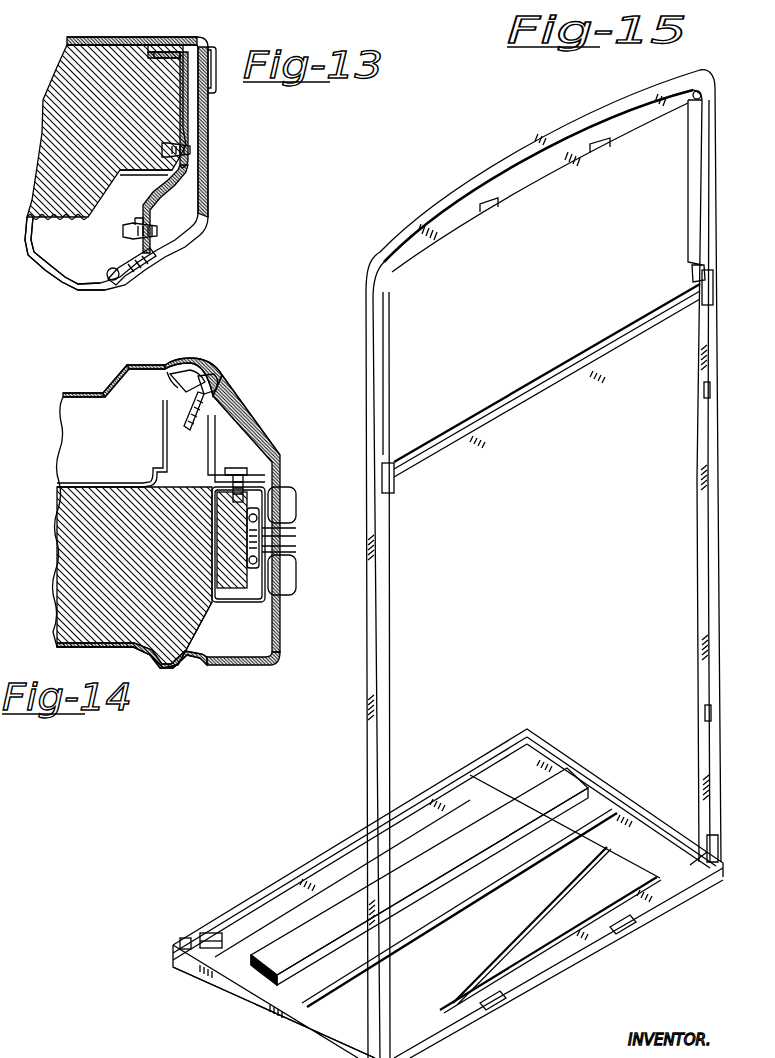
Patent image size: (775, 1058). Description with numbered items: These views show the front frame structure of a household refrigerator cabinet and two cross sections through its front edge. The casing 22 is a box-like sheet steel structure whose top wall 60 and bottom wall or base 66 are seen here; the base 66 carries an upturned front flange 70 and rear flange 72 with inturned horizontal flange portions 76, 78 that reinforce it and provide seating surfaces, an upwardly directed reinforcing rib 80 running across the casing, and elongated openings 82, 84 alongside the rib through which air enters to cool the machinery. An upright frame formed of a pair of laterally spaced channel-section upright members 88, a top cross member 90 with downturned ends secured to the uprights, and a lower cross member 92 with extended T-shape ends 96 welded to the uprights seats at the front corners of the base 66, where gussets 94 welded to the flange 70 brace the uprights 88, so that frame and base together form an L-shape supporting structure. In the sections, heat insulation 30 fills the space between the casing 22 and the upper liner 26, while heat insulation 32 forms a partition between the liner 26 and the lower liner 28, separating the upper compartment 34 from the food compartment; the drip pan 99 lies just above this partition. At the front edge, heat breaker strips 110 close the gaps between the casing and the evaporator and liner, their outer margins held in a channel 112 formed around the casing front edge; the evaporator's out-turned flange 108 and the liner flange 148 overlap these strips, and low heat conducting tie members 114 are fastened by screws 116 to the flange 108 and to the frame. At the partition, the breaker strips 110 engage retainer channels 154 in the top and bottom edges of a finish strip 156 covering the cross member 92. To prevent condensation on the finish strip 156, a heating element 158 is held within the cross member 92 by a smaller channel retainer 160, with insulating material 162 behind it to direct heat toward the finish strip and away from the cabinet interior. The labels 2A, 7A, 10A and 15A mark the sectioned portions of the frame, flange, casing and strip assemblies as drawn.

In FIG. 13, the side frame 2A is at (208, 113).
In FIG. 15, the side frame 2A is at (366, 344).
In FIG. 15, the side rail 7A is at (605, 774).
In FIG. 13, the shell panel 10A is at (55, 275).
In FIG. 14, the shell panel 10A is at (77, 395).
In FIG. 14, the clip plate 15A is at (296, 520).
In FIG. 13, the casing 22 is at (168, 38).
In FIG. 13, the liner 26 is at (86, 222).
In FIG. 14, the second liner 28 is at (183, 668).
In FIG. 13, the heat insulation 30 is at (70, 98).
In FIG. 14, the heat insulation 32 is at (72, 554).
In FIG. 13, the compartment 34 is at (87, 276).
In FIG. 14, the compartment 34 is at (72, 448).
In FIG. 13, the top wall 60 is at (148, 40).
In FIG. 15, the bottom wall 66 is at (466, 1028).
In FIG. 15, the front flange 70 is at (530, 983).
In FIG. 15, the rear flange 72 is at (180, 942).
In FIG. 15, the flange portion 76 is at (557, 940).
In FIG. 15, the flange portion 78 is at (452, 783).
In FIG. 15, the reinforcing rib 80 is at (503, 823).
In FIG. 15, the elongated opening 82 is at (233, 943).
In FIG. 15, the elongated opening 84 is at (303, 977).
In FIG. 15, the upright member 88 is at (391, 662).
In FIG. 13, the top cross member 90 is at (164, 67).
In FIG. 15, the top cross member 90 is at (541, 168).
In FIG. 14, the lower cross member 92 is at (262, 534).
In FIG. 15, the lower cross member 92 is at (576, 372).
In FIG. 15, the gusset 94 is at (692, 280).
In FIG. 15, the T-shape end 96 is at (396, 478).
In FIG. 14, the pan 99 is at (102, 487).
In FIG. 13, the out-turned flange 108 is at (150, 258).
In FIG. 14, the out-turned flange 108 is at (172, 404).
In FIG. 13, the heat breaker strip 110 is at (208, 164).
In FIG. 14, the heat breaker strip 110 is at (235, 412).
In FIG. 13, the channel 112 is at (214, 48).
In FIG. 13, the tie member 114 is at (165, 192).
In FIG. 14, the tie member 114 is at (213, 455).
In FIG. 13, the screw 116 is at (162, 148).
In FIG. 14, the screw 116 is at (222, 383).
In FIG. 14, the outturned flange 148 is at (232, 666).
In FIG. 14, the retainer channel 154 is at (278, 571).
In FIG. 14, the finish strip 156 is at (297, 498).
In FIG. 14, the heating element 158 is at (297, 553).
In FIG. 14, the channel retainer 160 is at (245, 543).
In FIG. 14, the insulating material 162 is at (220, 523).